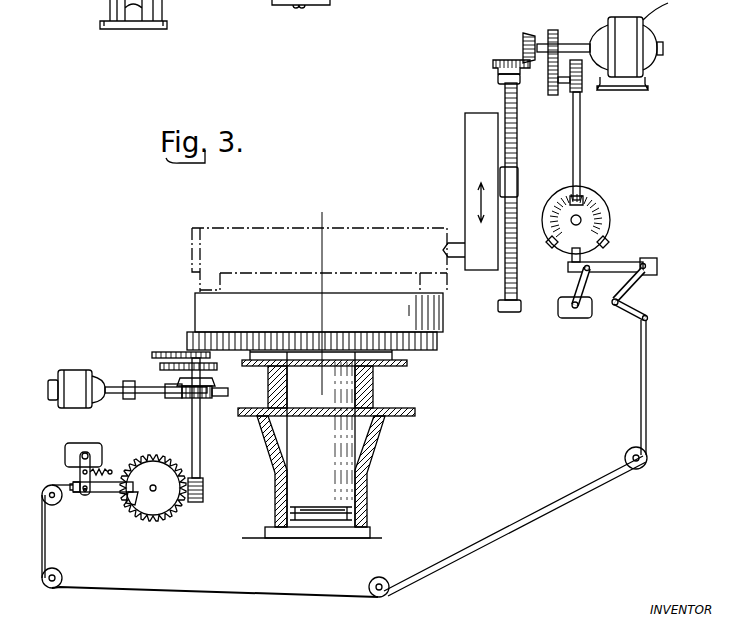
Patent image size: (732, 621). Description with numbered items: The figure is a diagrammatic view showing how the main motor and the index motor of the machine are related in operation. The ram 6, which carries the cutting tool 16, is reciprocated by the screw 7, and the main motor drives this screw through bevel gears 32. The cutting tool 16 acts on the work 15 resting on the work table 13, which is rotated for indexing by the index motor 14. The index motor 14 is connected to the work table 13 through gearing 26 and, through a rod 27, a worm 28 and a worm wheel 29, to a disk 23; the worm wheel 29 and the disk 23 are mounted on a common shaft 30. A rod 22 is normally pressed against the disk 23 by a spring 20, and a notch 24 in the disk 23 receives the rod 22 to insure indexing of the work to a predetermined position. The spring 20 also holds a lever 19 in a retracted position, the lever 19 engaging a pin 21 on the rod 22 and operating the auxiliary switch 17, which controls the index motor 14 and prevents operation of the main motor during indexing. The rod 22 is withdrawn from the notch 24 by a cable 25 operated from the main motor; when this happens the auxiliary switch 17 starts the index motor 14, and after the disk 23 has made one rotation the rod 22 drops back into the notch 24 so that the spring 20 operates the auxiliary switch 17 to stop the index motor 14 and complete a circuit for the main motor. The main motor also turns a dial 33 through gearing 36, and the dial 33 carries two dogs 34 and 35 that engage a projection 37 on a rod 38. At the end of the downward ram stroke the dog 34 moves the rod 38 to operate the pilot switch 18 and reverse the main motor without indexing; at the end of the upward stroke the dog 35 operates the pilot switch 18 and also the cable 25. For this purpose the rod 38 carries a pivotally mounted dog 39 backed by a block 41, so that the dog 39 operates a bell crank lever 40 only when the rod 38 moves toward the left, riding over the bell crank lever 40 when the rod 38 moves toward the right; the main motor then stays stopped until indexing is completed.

The ram 6 is at (470, 163).
The screw 7 is at (516, 142).
The work table 13 is at (195, 300).
The index motor 14 is at (78, 373).
The work 15 is at (340, 228).
The cutting tool 16 is at (456, 258).
The auxiliary switch 17 is at (85, 446).
The pilot switch 18 is at (571, 318).
The lever 19 is at (72, 485).
The spring 20 is at (111, 469).
The pin 21 is at (85, 493).
The rod 22 is at (105, 493).
The disk 23 is at (140, 460).
The notch 24 is at (130, 506).
The cable 25 is at (528, 515).
The gearing 26 is at (215, 398).
The rod 27 is at (200, 460).
The worm 28 is at (204, 490).
The worm wheel 29 is at (170, 516).
The shaft 30 is at (154, 485).
The bevel gears 32 is at (510, 47).
The dial 33 is at (600, 200).
The dog 34 is at (547, 243).
The dog 35 is at (608, 240).
The gearing 36 is at (614, 123).
The projection 37 is at (570, 263).
The rod 38 is at (615, 263).
The pivotally mounted dog 39 is at (647, 277).
The bell crank lever 40 is at (583, 290).
The block 41 is at (657, 270).